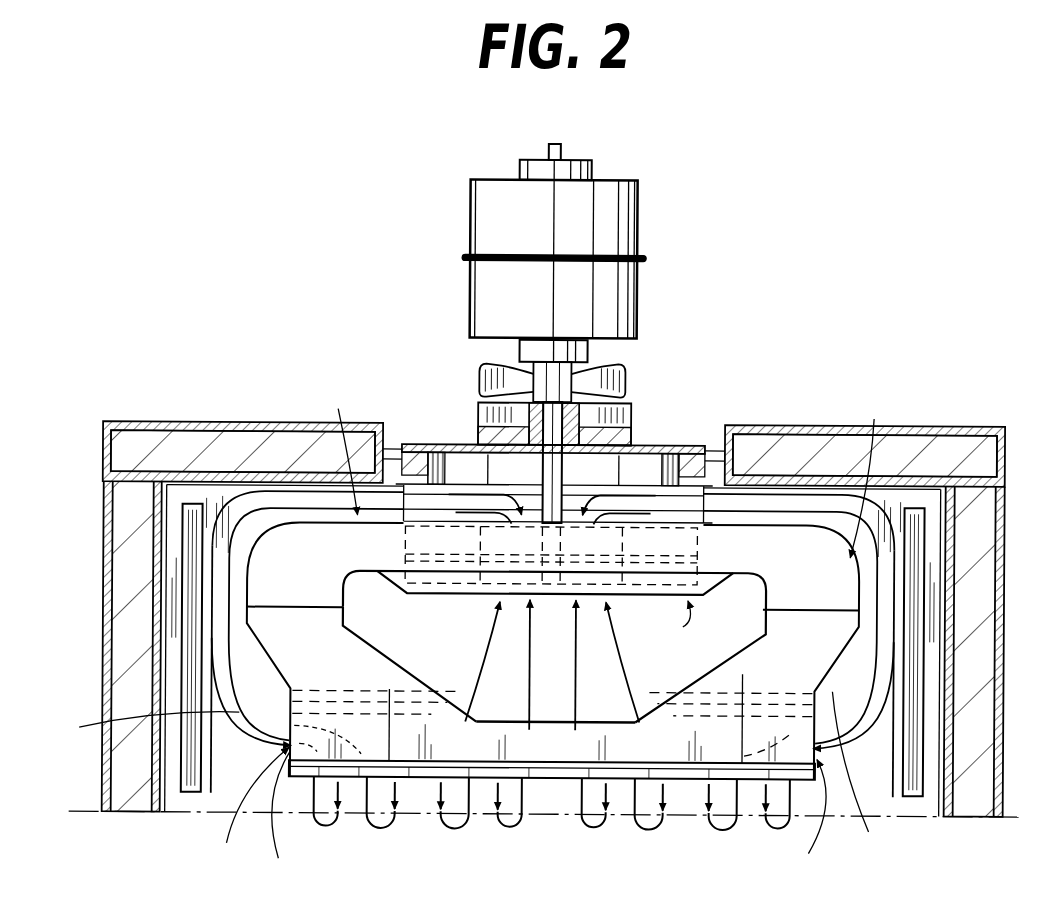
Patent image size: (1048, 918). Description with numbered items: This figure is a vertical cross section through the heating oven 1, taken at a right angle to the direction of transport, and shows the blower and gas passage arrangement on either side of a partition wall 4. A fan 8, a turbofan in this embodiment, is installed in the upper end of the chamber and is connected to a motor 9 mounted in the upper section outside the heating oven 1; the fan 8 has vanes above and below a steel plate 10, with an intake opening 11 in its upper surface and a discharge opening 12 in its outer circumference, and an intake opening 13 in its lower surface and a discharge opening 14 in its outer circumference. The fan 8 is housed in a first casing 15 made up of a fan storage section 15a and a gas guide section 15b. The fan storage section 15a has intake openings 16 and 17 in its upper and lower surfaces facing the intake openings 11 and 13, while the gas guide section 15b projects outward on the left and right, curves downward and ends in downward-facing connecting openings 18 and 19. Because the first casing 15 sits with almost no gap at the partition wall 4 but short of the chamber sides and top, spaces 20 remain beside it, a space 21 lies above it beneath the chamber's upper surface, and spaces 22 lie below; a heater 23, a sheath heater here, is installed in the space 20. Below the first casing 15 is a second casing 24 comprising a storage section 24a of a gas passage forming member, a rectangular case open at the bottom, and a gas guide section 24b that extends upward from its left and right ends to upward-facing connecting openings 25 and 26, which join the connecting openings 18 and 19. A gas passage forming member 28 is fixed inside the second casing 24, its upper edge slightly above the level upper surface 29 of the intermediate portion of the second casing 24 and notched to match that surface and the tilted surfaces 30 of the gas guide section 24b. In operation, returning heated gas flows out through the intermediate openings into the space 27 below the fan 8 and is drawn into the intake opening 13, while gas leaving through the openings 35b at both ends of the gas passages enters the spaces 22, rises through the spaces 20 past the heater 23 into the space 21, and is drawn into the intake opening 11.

The heating oven 1 is at (232, 421).
The partition wall 4 is at (122, 653).
The fan 8 is at (440, 443).
The motor 9 is at (613, 232).
The steel plate 10 is at (593, 597).
The intake opening 11 is at (483, 475).
The discharge opening 12 is at (700, 540).
The intake opening 13 is at (500, 597).
The discharge opening 14 is at (700, 586).
The first casing 15 is at (336, 442).
The fan storage section 15a is at (656, 623).
The gas guide section 15b is at (874, 469).
The intake opening 16 is at (590, 495).
The intake opening 17 is at (563, 598).
The connecting opening 18 is at (312, 611).
The connecting opening 19 is at (828, 620).
The space 20 is at (222, 566).
The space 21 is at (575, 516).
The space 22 is at (137, 731).
The heater 23 is at (200, 528).
The second casing 24 is at (234, 809).
The storage section of a gas passage forming member 24a is at (806, 828).
The gas guide section 24b is at (868, 783).
The connecting opening 25 is at (292, 608).
The connecting opening 26 is at (805, 608).
The space 27 is at (548, 705).
The gas passage forming member 28 is at (700, 722).
The level upper surface 29 is at (512, 730).
The tilted surface 30 is at (665, 699).
The opening 35b is at (276, 824).